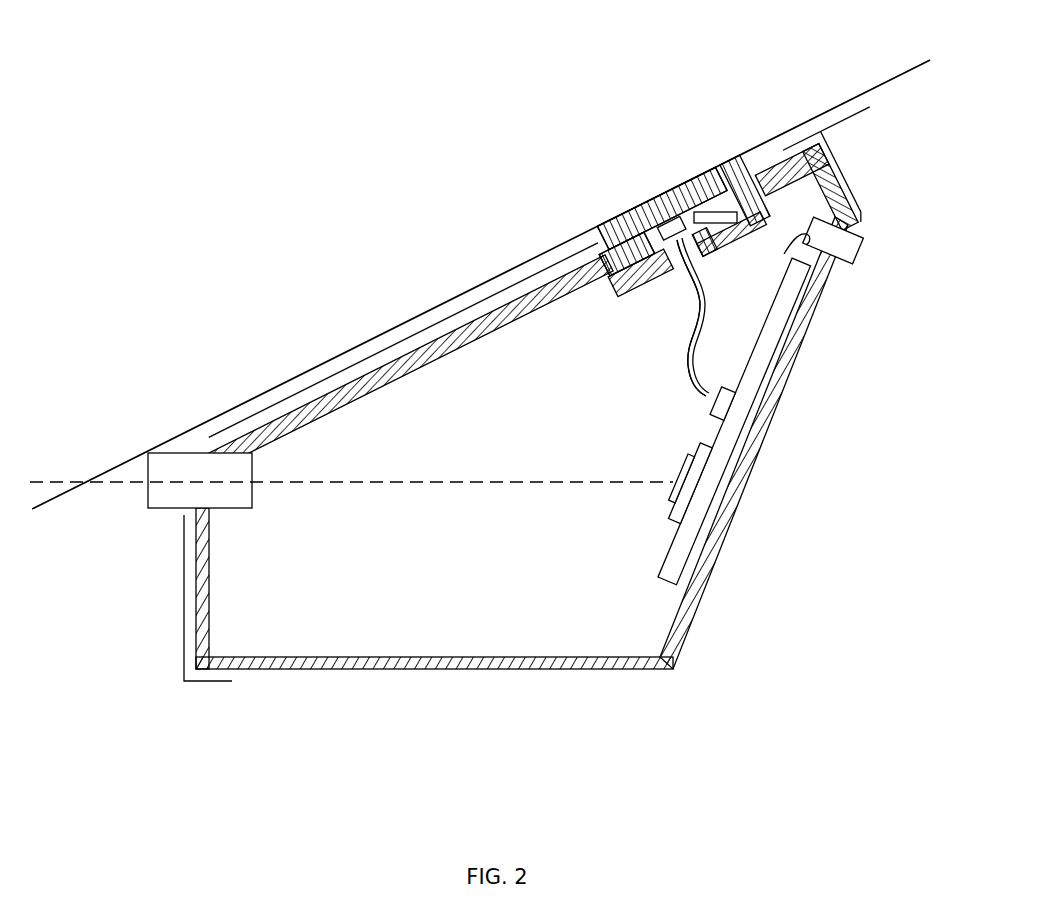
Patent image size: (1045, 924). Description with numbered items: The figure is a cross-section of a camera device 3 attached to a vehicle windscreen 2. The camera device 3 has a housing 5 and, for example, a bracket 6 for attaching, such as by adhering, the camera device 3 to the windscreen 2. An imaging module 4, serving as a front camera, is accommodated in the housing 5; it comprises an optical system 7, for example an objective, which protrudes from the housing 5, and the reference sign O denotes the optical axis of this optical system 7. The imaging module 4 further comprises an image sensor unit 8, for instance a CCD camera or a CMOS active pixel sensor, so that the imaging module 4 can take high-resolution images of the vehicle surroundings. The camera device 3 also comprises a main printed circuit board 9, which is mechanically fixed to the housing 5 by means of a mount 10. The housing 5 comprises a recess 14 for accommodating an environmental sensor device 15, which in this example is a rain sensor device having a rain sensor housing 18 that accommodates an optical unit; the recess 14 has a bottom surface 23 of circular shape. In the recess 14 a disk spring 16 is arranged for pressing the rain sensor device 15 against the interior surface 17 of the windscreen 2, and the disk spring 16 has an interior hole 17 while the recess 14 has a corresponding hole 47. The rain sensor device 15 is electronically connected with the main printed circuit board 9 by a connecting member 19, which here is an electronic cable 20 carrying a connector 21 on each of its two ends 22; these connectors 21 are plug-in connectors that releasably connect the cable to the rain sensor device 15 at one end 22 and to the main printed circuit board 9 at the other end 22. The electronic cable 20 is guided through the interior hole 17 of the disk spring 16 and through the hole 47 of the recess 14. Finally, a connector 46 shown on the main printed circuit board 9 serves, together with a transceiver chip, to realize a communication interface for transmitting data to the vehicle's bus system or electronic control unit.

The windscreen 2 is at (878, 86).
The camera device 3 is at (858, 731).
The imaging module 4 is at (520, 716).
The housing 5 is at (190, 622).
The bracket 6 is at (842, 122).
The optical system 7 is at (228, 510).
The image sensor unit 8 is at (666, 503).
The main printed circuit board 9 is at (782, 283).
The mount 10 is at (690, 600).
The recess 14 is at (598, 245).
The environmental sensor device 15 is at (667, 193).
The disk spring 16 is at (713, 165).
The interior surface 17 is at (700, 230).
The rain sensor housing 18 is at (662, 208).
The connecting member 19 is at (690, 367).
The electronic cable 20 is at (691, 318).
The connector 21 is at (712, 420).
The end 22 is at (712, 397).
The bottom surface 23 is at (603, 215).
The connector 46 is at (866, 250).
The hole 47 is at (675, 276).
The optical axis O is at (100, 492).